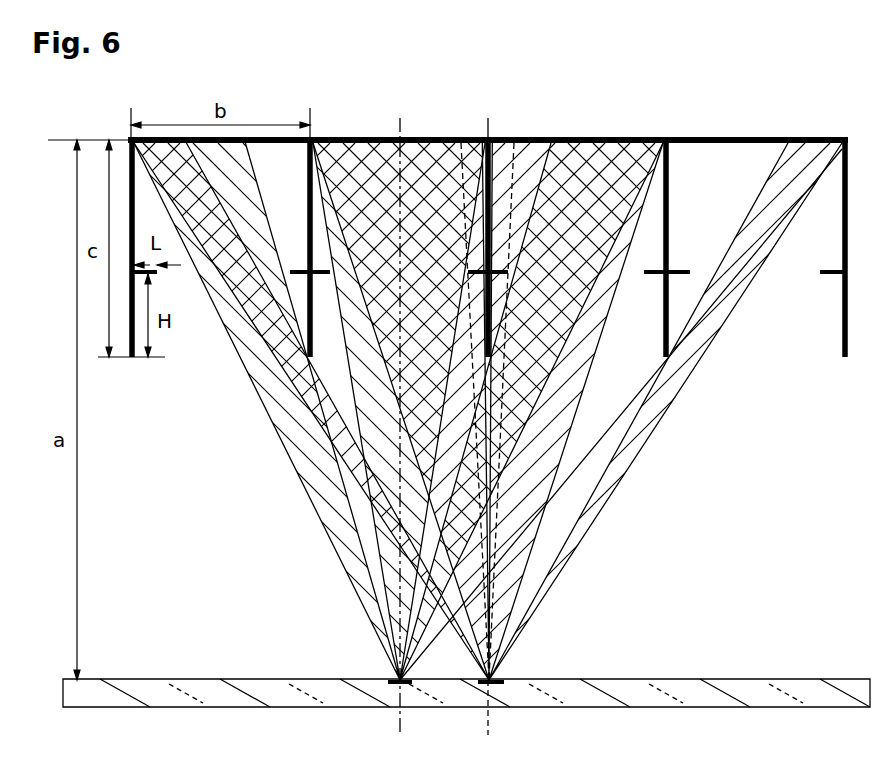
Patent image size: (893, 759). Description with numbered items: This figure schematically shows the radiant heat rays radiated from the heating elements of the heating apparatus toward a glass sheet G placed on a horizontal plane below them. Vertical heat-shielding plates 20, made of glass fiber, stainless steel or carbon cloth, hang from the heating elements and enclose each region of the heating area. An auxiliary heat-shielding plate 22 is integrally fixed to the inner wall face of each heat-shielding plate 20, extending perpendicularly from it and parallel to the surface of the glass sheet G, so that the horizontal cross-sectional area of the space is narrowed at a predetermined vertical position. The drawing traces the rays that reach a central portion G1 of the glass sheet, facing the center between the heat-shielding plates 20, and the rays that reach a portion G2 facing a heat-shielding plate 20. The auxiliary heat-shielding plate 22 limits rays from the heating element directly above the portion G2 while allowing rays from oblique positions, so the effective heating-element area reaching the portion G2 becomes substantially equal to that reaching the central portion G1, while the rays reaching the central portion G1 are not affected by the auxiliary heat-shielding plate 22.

The heat-shielding plate 20 is at (843, 330).
The auxiliary heat-shielding plate 22 is at (840, 272).
The glass sheet G is at (685, 678).
The central portion of the glass sheet G1 is at (392, 679).
The portion of the glass sheet facing the heat-shielding plate G2 is at (503, 679).